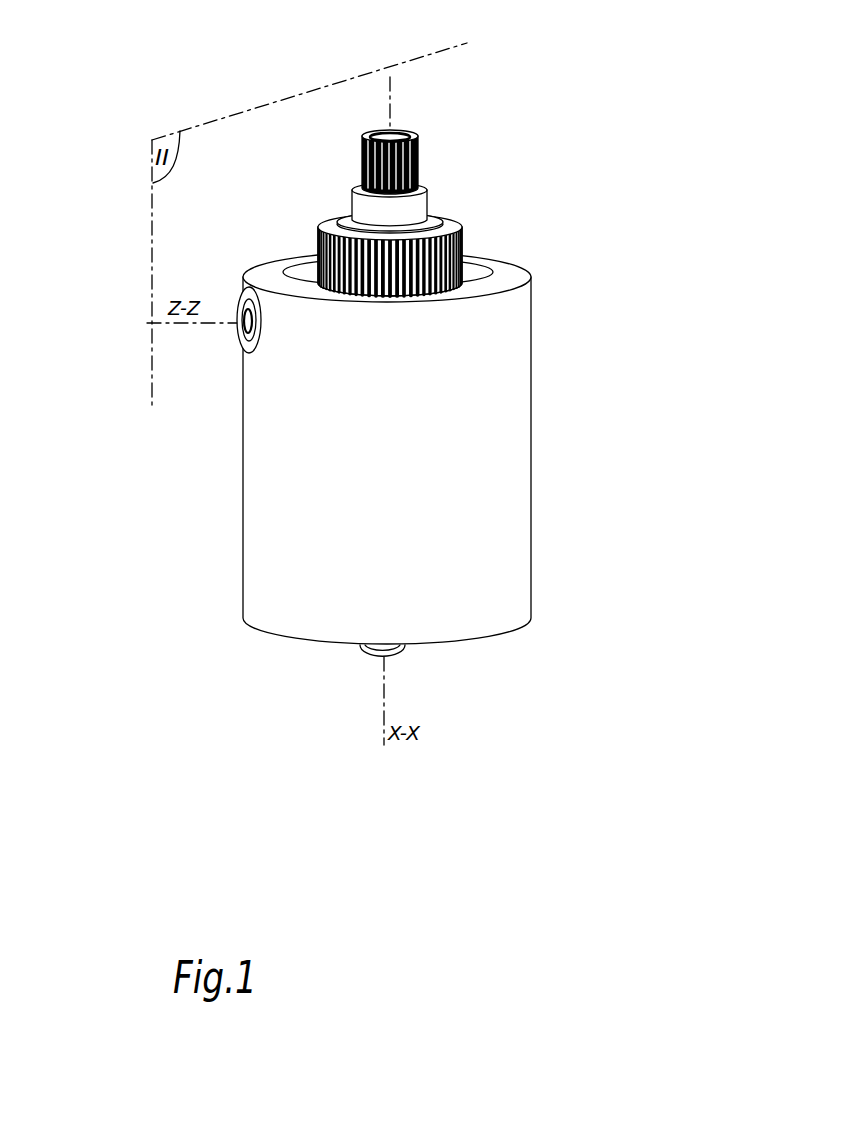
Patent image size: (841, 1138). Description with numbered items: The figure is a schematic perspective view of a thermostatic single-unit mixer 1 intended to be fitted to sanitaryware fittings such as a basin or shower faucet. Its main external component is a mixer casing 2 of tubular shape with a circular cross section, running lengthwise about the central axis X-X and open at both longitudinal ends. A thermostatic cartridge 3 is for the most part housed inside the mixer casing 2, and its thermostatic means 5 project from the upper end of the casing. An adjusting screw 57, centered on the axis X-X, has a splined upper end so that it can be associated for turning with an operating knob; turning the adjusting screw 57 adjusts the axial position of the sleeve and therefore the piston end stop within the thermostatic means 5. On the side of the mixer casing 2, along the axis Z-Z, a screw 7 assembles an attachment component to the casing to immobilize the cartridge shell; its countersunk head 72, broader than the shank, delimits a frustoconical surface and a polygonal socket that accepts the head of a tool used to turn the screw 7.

The thermostatic single-unit mixer 1 is at (390, 373).
The mixer casing 2 is at (242, 533).
The thermostatic cartridge 3 is at (307, 233).
The thermostatic means 5 is at (453, 212).
The adjusting screw 57 is at (421, 163).
The screw 7 is at (179, 312).
The countersunk head 72 is at (243, 300).